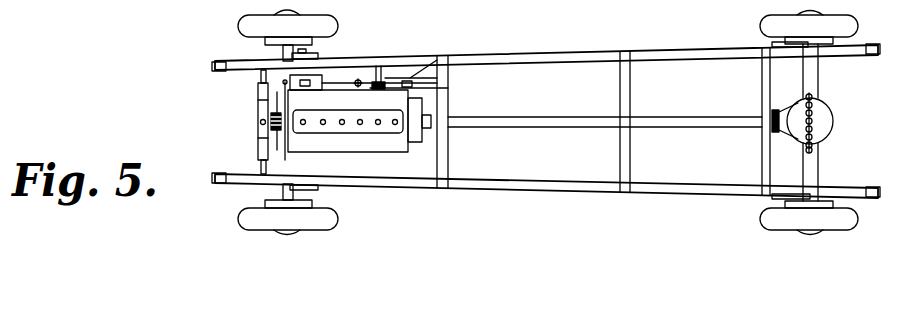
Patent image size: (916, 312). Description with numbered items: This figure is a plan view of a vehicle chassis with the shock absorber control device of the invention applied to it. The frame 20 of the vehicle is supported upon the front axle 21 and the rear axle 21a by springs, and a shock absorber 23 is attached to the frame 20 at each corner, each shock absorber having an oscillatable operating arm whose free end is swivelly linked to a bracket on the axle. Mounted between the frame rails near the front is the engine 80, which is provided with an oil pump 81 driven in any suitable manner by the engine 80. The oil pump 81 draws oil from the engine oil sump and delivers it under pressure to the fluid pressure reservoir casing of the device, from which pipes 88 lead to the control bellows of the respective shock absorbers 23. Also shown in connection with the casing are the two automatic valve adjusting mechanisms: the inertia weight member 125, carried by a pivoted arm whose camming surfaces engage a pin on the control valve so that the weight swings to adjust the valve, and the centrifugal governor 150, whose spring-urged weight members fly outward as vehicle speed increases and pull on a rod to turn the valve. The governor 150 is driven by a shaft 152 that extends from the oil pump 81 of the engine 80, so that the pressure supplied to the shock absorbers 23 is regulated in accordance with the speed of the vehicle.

The frame 20 is at (546, 126).
The pipes 88 is at (505, 53).
The front axle 21 is at (283, 47).
The rear axle 21a is at (813, 75).
The shock absorber 23 is at (322, 55).
The engine 80 is at (338, 138).
The oil pump 81 is at (297, 90).
The inertia weight member 125 is at (448, 88).
The centrifugal governor 150 is at (358, 86).
The shaft 152 is at (343, 84).